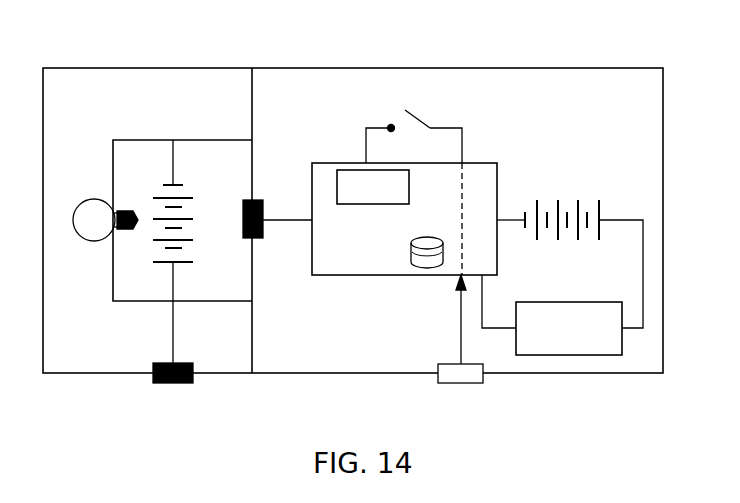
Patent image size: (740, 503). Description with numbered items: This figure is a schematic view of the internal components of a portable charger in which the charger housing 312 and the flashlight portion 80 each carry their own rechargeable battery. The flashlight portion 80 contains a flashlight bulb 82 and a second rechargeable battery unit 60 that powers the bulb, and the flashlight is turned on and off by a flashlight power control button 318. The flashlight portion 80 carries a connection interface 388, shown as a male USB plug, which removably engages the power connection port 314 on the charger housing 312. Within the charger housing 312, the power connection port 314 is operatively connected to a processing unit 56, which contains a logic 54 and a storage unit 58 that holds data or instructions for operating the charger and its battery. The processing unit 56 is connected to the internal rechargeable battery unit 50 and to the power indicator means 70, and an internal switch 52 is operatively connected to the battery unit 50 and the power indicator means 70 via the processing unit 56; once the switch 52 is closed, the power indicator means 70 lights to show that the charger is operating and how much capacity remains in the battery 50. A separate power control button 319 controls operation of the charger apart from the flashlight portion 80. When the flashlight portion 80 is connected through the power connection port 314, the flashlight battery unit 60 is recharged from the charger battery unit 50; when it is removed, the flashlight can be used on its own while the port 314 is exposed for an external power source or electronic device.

The flashlight portion 80 is at (128, 39).
The charger housing 312 is at (540, 67).
The second rechargeable battery unit 60 is at (186, 198).
The light bulb 82 is at (90, 210).
The connection interface 388 is at (243, 218).
The power connection port 314 is at (263, 228).
The flashlight power control button 318 is at (165, 384).
The processing unit 56 is at (481, 163).
The logic 54 is at (347, 170).
The internal switch 52 is at (410, 113).
The storage unit 58 is at (411, 258).
The rechargeable battery unit 50 is at (571, 200).
The power indicator means 70 is at (558, 302).
The power control button 319 is at (455, 378).